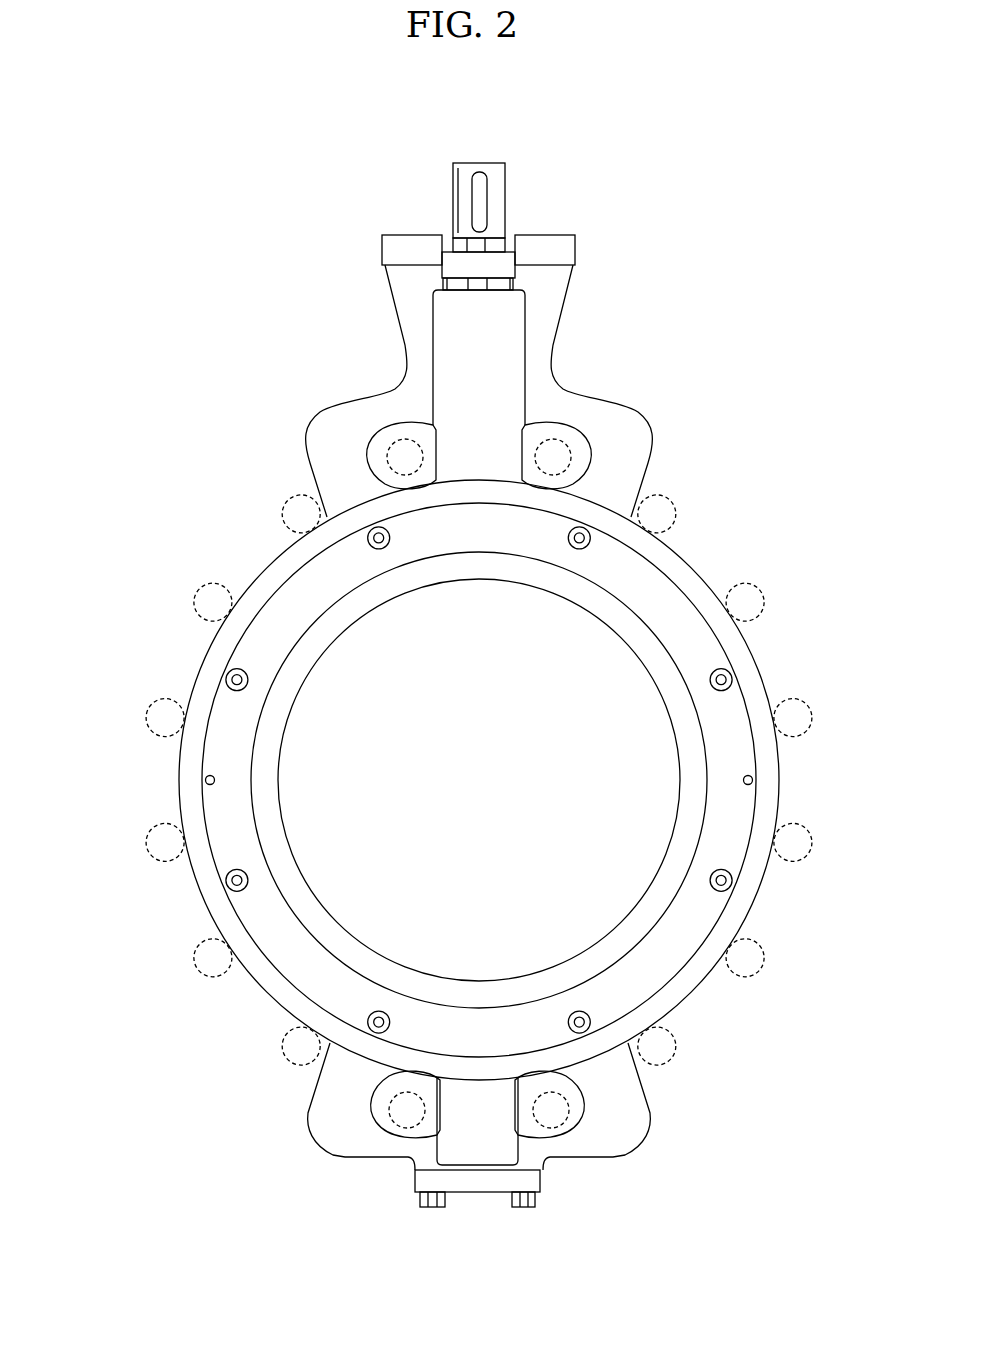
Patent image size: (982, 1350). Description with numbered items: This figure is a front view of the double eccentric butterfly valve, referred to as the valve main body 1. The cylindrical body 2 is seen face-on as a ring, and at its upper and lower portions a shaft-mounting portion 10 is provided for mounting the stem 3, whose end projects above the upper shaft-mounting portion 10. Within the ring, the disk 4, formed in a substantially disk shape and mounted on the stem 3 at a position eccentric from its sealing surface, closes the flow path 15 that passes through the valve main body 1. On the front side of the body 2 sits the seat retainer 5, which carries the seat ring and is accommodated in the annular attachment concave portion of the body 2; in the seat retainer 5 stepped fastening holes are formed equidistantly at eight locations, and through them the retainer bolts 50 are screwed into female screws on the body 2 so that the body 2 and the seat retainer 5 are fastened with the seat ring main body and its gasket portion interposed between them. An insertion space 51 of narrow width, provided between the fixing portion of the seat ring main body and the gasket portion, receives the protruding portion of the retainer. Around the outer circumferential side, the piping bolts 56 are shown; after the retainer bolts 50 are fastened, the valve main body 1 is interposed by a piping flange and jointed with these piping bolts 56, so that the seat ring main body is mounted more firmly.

The valve main body 1 is at (697, 566).
The body 2 is at (270, 575).
The stem 3 is at (497, 192).
The disk 4 is at (493, 823).
The seat retainer 5 is at (472, 1033).
The shaft-mounting portion 10 is at (500, 337).
The flow path 15 is at (740, 714).
The retainer bolts 50 is at (376, 526).
The insertion space 51 is at (714, 869).
The piping bolts 56 is at (575, 436).